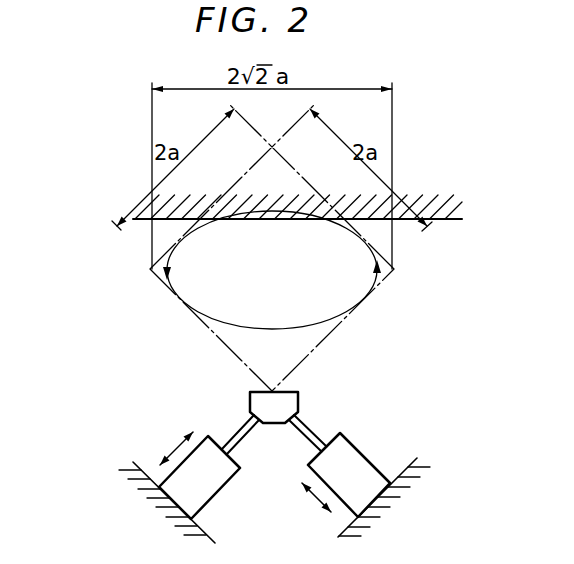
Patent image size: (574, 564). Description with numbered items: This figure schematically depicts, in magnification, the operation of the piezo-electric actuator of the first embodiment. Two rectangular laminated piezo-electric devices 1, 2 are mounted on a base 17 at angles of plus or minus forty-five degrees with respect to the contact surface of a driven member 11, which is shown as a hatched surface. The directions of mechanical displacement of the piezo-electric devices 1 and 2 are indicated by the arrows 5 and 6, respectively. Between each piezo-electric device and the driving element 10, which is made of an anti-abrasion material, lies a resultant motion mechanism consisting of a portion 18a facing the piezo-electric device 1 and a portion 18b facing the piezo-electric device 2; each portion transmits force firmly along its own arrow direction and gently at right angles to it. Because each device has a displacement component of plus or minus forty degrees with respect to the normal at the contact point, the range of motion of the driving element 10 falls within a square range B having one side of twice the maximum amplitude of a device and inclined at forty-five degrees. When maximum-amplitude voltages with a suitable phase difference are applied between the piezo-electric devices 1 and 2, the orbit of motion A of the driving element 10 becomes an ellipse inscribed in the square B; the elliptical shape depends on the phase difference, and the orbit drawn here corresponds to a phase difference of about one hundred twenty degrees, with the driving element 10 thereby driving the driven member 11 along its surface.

The piezo-electric device 1 is at (207, 448).
The piezo-electric device 2 is at (363, 463).
The arrow 5 is at (172, 446).
The arrow 6 is at (316, 497).
The driving element 10 is at (300, 396).
The driven member 11 is at (433, 200).
The base 17 is at (132, 468).
The portion of resultant motion mechanism 18a is at (243, 425).
The portion of resultant motion mechanism 18b is at (312, 433).
The orbit of motion A is at (326, 319).
The square range B is at (374, 252).